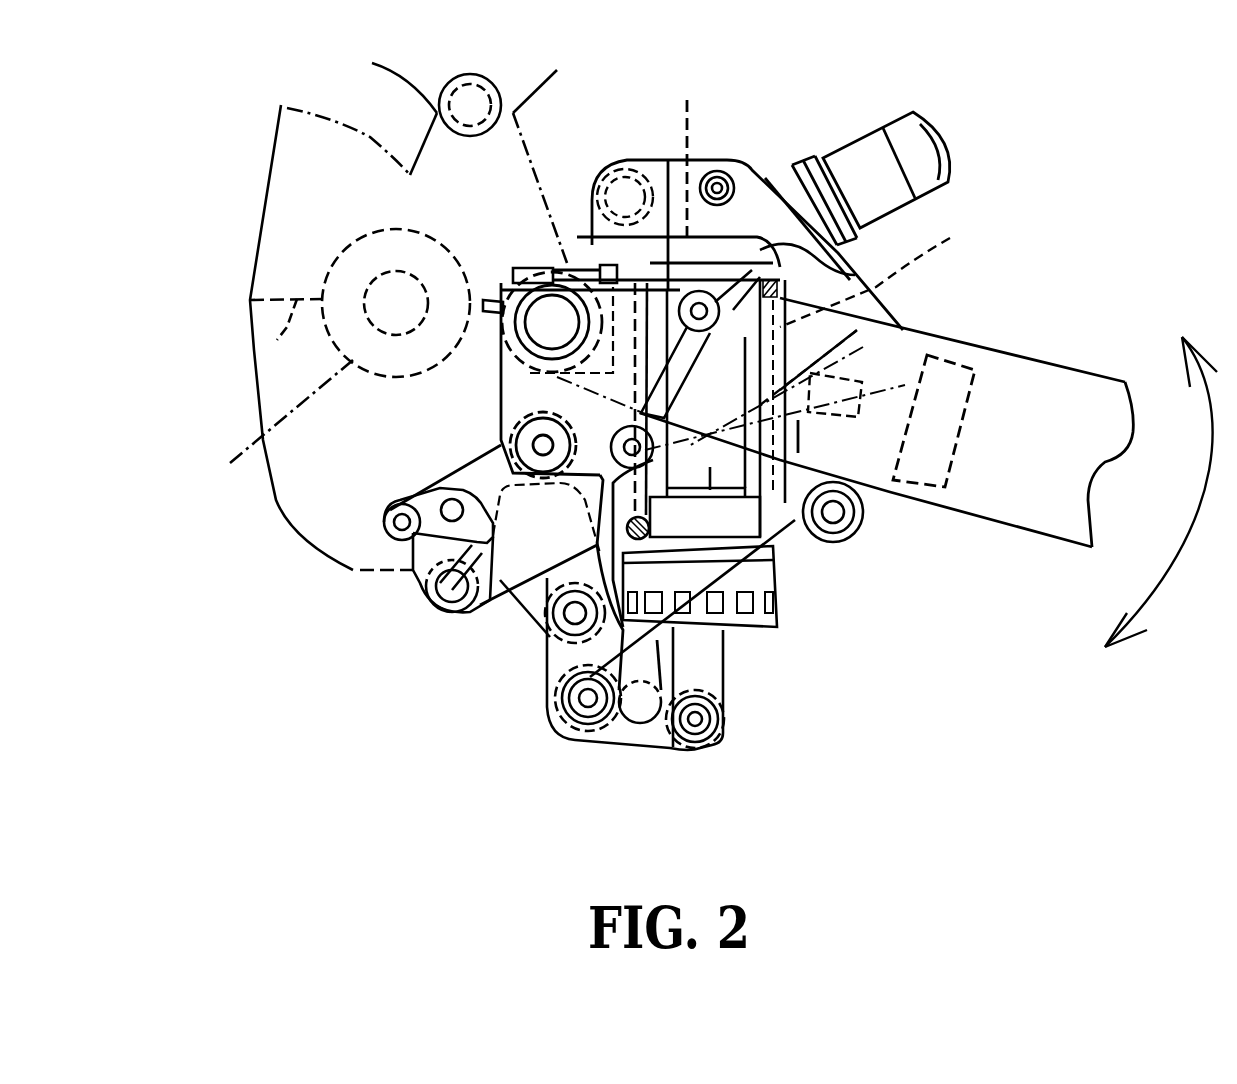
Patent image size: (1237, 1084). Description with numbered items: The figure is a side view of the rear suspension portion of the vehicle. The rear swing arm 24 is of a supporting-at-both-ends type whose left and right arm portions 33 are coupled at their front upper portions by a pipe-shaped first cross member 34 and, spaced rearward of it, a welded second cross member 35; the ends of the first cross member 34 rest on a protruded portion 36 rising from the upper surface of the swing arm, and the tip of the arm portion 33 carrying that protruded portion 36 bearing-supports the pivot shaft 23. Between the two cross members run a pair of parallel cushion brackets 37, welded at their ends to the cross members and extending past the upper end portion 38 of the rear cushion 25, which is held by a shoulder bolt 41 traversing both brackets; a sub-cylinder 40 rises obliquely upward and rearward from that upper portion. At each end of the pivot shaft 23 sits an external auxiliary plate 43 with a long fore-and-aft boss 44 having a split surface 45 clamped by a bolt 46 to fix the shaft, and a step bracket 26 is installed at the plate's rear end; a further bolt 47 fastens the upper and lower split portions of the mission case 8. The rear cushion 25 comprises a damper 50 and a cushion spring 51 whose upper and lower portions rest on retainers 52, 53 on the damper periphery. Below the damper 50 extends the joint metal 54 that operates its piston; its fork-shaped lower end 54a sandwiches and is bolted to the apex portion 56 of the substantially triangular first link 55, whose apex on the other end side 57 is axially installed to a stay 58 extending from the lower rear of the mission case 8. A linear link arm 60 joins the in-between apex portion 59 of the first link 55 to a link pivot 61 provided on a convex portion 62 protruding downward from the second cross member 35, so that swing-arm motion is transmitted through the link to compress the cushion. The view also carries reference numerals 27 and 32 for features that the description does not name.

The mission case 8 is at (297, 188).
The pivot shaft 23 is at (505, 360).
The rear swing arm 24 is at (1075, 374).
The rear cushion 25 is at (750, 648).
The step bracket 26 is at (884, 265).
The engine case line 27 is at (279, 428).
The crankcase 32 is at (256, 343).
The arm portion 33 is at (898, 320).
The first cross member 34 is at (610, 157).
The second cross member 35 is at (963, 336).
The protruded portion 36 is at (572, 237).
The cushion bracket 37 is at (779, 230).
The upper end portion 38 is at (682, 84).
The sub-cylinder 40 is at (867, 141).
The shoulder bolt 41 is at (718, 170).
The external auxiliary plate 43 is at (497, 410).
The boss 44 is at (527, 267).
The split surface 45 is at (548, 265).
The bolt 46 is at (603, 268).
The bolt 47 is at (615, 263).
The damper 50 is at (778, 590).
The cushion spring 51 is at (800, 548).
The retainer 52 is at (845, 274).
The retainer 53 is at (770, 655).
The joint metal 54 is at (715, 668).
The lower end 54a is at (700, 745).
The first link 55 is at (553, 673).
The apex portion 56 is at (737, 728).
The apex on the other end side 57 is at (568, 640).
The stay 58 is at (523, 608).
The in-between apex portion 59 is at (570, 733).
The link arm 60 is at (660, 642).
The link pivot 61 is at (857, 537).
The convex portion 62 is at (880, 500).